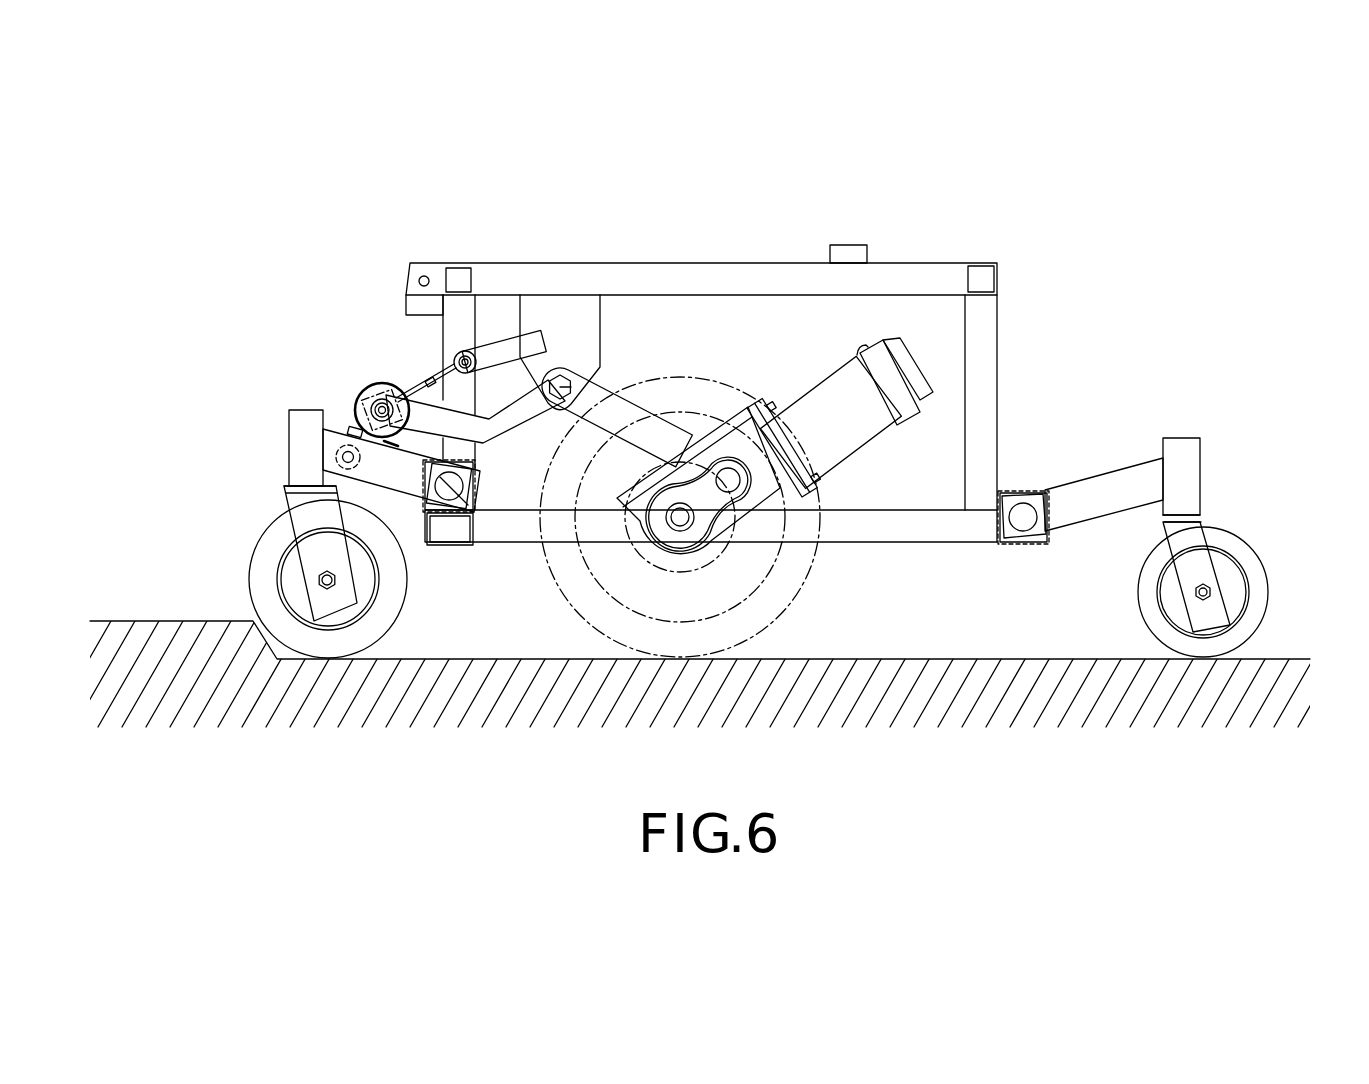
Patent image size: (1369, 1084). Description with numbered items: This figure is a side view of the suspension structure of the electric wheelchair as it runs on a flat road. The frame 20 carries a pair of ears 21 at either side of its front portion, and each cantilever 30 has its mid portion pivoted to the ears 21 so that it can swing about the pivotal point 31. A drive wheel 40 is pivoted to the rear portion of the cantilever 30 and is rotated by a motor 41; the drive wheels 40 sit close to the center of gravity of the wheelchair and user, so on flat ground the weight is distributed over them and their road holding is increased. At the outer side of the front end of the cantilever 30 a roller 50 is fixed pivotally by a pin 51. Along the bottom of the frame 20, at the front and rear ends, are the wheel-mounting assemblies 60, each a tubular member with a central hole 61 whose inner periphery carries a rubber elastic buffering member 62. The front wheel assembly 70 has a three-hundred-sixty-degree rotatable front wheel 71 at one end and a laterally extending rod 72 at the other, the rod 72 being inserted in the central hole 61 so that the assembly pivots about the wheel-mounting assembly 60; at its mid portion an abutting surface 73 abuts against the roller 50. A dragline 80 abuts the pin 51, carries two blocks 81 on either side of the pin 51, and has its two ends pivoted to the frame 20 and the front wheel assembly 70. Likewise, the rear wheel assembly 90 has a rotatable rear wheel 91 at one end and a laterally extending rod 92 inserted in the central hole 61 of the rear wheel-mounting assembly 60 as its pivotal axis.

The frame 20 is at (944, 230).
The ears 21 is at (585, 323).
The cantilevers 30 is at (637, 408).
The pivotal point 31 is at (570, 386).
The drive wheels 40 is at (790, 577).
The motor 41 is at (830, 398).
The rollers 50 is at (375, 384).
The pin 51 is at (385, 430).
The wheel-mounting assemblies 60 is at (472, 464).
The central hole 61 is at (465, 495).
The elastic buffering member 62 is at (473, 500).
The front wheel assemblies 70 is at (272, 447).
The front wheel 71 is at (262, 562).
The laterally extending rod 72 is at (450, 492).
The abutting surface 73 is at (357, 446).
The draglines 80 is at (410, 387).
The blocks 81 is at (428, 383).
The rear wheel assemblies 90 is at (1232, 497).
The rear wheel 91 is at (1245, 560).
The laterally extending rod 92 is at (1050, 541).